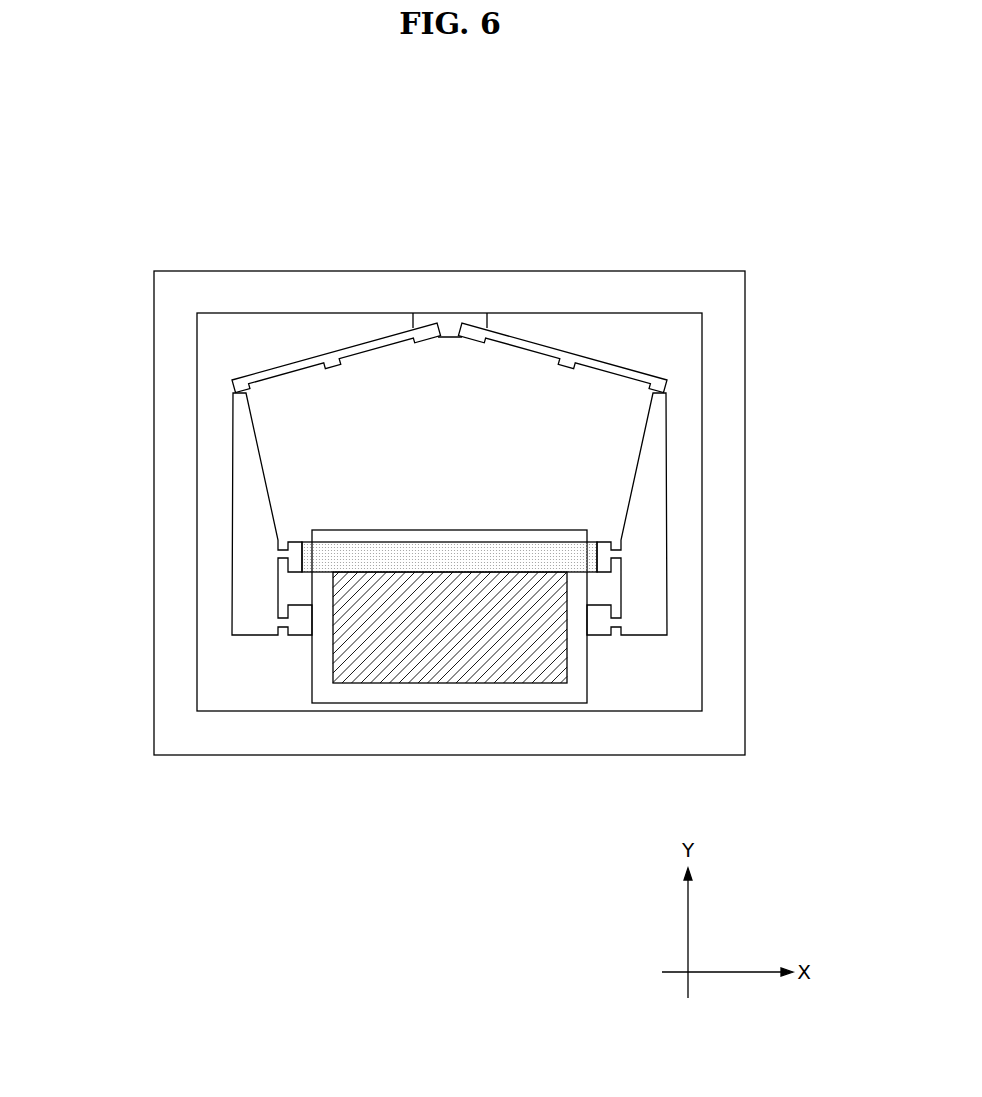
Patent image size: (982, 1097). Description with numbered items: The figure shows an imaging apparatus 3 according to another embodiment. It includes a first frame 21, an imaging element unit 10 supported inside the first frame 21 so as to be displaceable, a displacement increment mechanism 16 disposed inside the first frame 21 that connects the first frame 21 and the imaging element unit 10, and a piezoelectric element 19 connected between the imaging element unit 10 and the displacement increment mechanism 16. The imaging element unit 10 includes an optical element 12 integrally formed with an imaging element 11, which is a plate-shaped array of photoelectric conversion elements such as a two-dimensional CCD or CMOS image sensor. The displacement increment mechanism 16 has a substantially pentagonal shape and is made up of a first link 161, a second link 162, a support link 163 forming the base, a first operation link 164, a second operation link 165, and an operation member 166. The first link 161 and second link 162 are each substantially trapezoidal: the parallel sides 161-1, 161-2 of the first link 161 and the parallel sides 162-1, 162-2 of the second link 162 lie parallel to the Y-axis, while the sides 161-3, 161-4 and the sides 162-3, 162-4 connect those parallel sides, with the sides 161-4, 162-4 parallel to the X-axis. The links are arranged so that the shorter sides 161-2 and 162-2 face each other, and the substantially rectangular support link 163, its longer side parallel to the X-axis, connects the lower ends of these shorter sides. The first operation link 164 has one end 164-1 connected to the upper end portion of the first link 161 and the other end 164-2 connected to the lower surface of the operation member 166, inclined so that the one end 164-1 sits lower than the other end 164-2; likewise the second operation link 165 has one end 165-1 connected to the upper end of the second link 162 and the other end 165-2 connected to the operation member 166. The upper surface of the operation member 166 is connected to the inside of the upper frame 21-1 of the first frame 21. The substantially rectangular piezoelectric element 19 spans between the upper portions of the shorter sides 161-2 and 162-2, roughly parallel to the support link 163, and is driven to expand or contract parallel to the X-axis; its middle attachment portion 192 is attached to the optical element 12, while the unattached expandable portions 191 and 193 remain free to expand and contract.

The imaging apparatus 3 is at (786, 218).
The imaging element unit 10 is at (600, 702).
The imaging element 11 is at (450, 685).
The optical element 12 is at (527, 703).
The displacement increment mechanism 16 is at (680, 362).
The piezoelectric element 19 is at (449, 494).
The expandable portion 191 is at (303, 540).
The attachment portion 192 is at (450, 542).
The expandable portion 193 is at (541, 520).
The first frame 21 is at (712, 271).
The upper frame 21-1 is at (182, 285).
The first link 161 is at (204, 524).
The side of first link 161-1 is at (232, 547).
The minor side of first link 161-2 is at (278, 588).
The side of first link 161-3 is at (268, 462).
The side of first link 161-4 is at (250, 635).
The second link 162 is at (694, 524).
The side of second link 162-1 is at (667, 547).
The minor side of second link 162-2 is at (621, 588).
The side of second link 162-3 is at (631, 462).
The side of second link 162-4 is at (649, 635).
The support link 163 is at (302, 636).
The first operation link 164 is at (321, 299).
The one end of first operation link 164-1 is at (241, 384).
The other end of first operation link 164-2 is at (425, 333).
The second operation link 165 is at (578, 299).
The one end of second operation link 165-1 is at (658, 384).
The other end of second operation link 165-2 is at (472, 333).
The operation member 166 is at (450, 313).